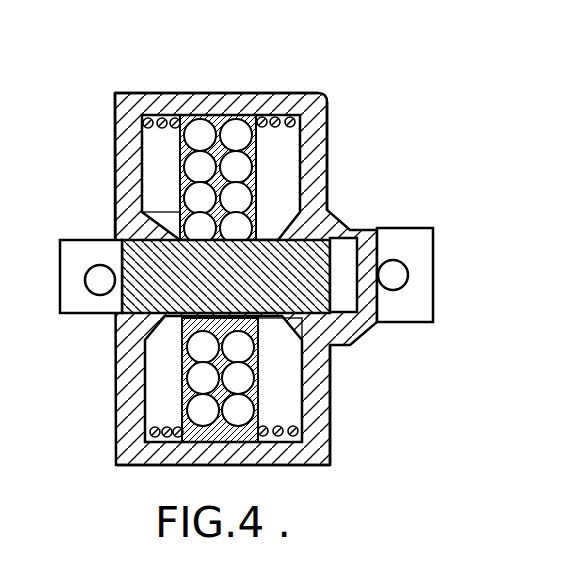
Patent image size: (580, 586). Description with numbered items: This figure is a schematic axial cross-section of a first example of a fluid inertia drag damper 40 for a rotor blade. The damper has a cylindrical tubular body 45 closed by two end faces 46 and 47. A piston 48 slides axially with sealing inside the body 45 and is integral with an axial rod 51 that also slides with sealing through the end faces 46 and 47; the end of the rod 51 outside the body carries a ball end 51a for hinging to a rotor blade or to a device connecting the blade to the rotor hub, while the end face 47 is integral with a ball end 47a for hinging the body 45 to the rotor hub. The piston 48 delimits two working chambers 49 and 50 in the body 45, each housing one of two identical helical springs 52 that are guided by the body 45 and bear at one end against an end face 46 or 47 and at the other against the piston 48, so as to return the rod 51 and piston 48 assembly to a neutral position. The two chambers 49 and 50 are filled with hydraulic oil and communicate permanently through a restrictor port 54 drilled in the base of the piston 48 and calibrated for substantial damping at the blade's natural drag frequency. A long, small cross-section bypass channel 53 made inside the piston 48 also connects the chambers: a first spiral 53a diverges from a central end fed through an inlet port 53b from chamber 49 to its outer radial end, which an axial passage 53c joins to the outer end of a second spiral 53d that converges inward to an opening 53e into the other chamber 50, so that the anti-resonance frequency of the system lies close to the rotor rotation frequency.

The fluid inertia drag damper 40 is at (328, 84).
The cylindrical tubular body 45 is at (117, 97).
The end face 46 is at (115, 137).
The end face 47 is at (310, 150).
The ball end 47a is at (393, 275).
The piston 48 is at (254, 183).
The working chamber 49 is at (158, 167).
The working chamber 50 is at (277, 387).
The axial rod 51 is at (190, 280).
The ball end 51a is at (100, 280).
The spring 52 is at (133, 463).
The bypass channel 53 is at (178, 406).
The first spiral 53a is at (200, 347).
The inlet port 53b is at (200, 228).
The axial passage 53c is at (200, 133).
The second spiral 53d is at (237, 167).
The opening 53e is at (237, 228).
The restrictor port 54 is at (301, 344).